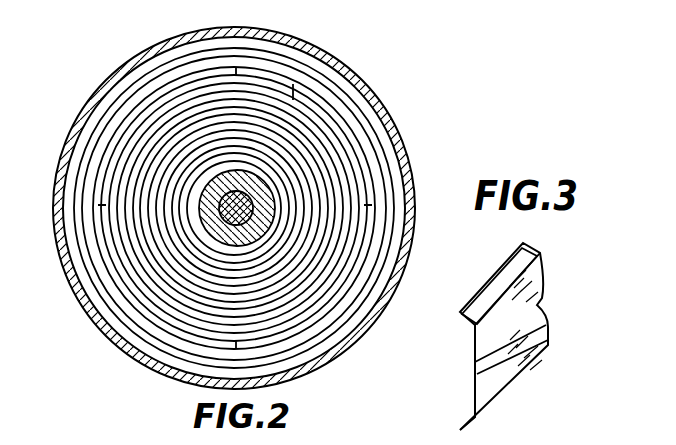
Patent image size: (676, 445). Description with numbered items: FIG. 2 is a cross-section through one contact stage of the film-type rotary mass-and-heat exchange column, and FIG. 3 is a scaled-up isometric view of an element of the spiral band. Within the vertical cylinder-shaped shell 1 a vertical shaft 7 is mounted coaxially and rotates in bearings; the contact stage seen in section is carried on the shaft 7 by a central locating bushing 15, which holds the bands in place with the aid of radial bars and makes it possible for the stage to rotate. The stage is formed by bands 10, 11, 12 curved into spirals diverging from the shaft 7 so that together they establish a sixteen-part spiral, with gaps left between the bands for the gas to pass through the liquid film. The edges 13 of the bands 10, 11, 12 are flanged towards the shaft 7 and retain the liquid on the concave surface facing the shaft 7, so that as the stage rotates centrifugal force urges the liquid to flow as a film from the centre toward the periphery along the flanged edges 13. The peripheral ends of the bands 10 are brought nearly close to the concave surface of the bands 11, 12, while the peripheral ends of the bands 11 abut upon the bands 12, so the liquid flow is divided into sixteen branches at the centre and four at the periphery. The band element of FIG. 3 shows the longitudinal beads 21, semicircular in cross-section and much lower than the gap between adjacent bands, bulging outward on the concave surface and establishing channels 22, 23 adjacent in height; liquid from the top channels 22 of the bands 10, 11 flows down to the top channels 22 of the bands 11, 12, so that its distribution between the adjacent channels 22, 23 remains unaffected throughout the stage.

In FIG. 2, the vertical cylinder-shaped shell 1 is at (87, 297).
In FIG. 2, the vertical shaft 7 is at (246, 179).
In FIG. 2, the band 10 is at (171, 236).
In FIG. 3, the band 10 is at (540, 264).
In FIG. 2, the band 11 is at (188, 256).
In FIG. 2, the band 12 is at (293, 92).
In FIG. 3, the flanged edge 13 is at (512, 265).
In FIG. 2, the central locating bushing 15 is at (252, 170).
In FIG. 3, the longitudinal bead 21 is at (473, 370).
In FIG. 3, the top channel 22 is at (473, 331).
In FIG. 3, the channel 23 is at (475, 397).